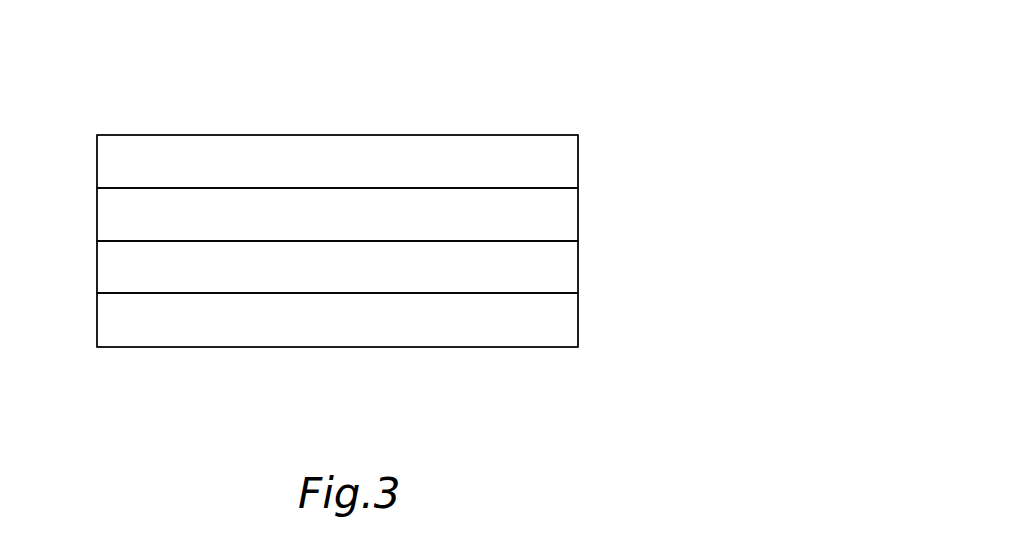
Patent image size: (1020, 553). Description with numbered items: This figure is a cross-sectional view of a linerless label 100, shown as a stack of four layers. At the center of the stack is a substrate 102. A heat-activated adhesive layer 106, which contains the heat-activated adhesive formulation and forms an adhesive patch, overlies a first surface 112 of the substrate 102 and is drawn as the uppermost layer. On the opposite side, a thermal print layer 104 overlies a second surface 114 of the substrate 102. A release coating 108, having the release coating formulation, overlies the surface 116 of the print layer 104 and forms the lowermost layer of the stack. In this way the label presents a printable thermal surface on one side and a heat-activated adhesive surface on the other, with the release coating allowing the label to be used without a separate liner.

The linerless label 100 is at (629, 34).
The substrate 102 is at (95, 207).
The thermal print layer 104 is at (95, 259).
The heat-activated adhesive layer 106 is at (95, 154).
The release coating 108 is at (95, 313).
The first surface 112 is at (578, 188).
The second surface 114 is at (578, 241).
The surface 116 is at (578, 293).